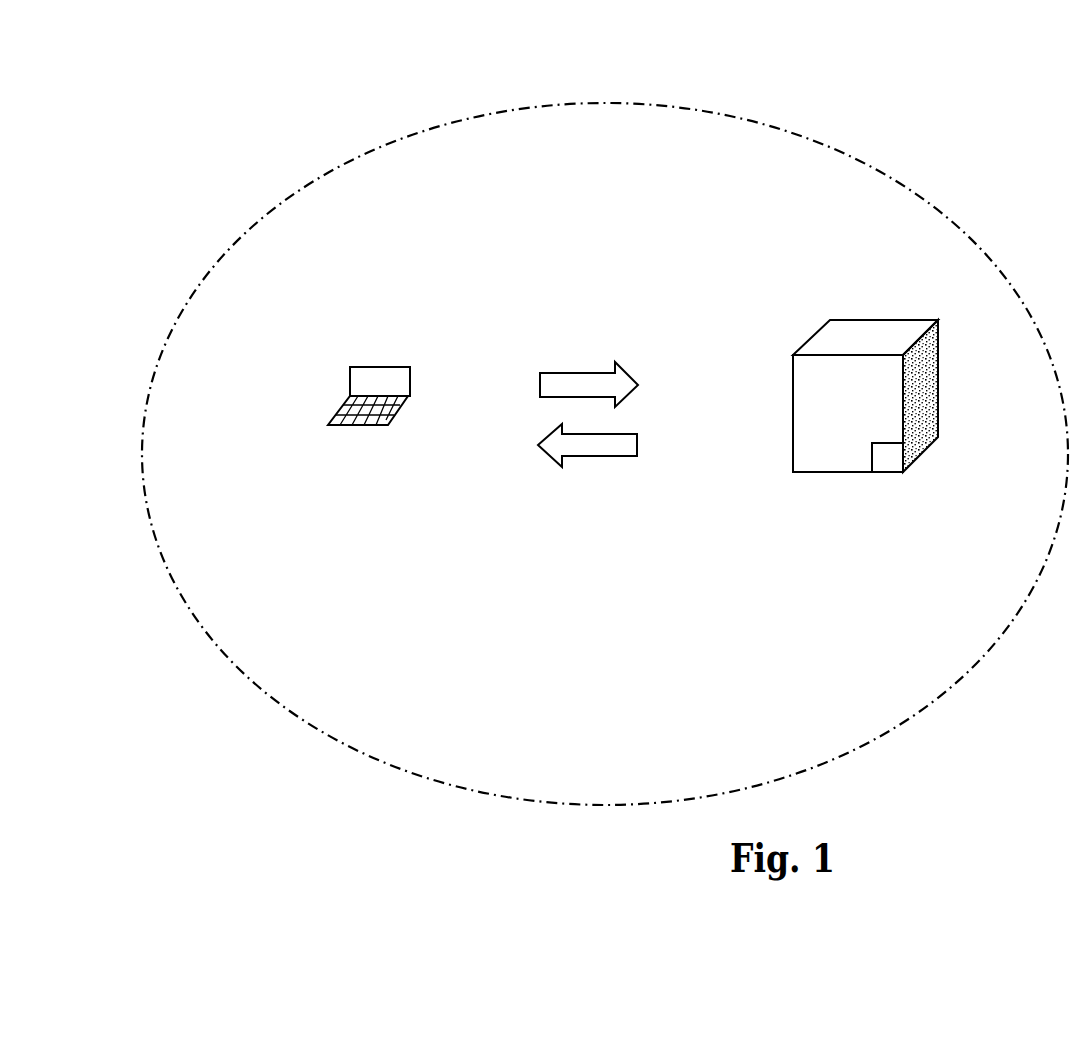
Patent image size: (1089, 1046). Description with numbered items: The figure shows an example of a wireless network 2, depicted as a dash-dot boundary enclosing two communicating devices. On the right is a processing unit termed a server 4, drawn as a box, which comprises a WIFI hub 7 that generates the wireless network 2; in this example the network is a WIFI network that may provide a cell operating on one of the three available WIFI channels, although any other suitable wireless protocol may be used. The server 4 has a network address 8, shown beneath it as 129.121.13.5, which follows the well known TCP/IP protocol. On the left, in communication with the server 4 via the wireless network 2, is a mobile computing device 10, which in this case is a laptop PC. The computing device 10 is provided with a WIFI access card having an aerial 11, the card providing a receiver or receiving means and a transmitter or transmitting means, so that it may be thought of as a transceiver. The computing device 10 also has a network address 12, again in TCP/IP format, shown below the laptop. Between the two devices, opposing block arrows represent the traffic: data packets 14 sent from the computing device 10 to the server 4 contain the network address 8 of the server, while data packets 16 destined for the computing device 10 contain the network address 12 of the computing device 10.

The wireless network 2 is at (674, 105).
The server 4 is at (846, 320).
The WIFI hub 7 is at (890, 455).
The network address 8 is at (843, 562).
The mobile computing device 10 is at (345, 368).
The aerial 11 is at (357, 346).
The network address 12 is at (290, 488).
The data packets 14 is at (480, 316).
The data packets 16 is at (483, 504).